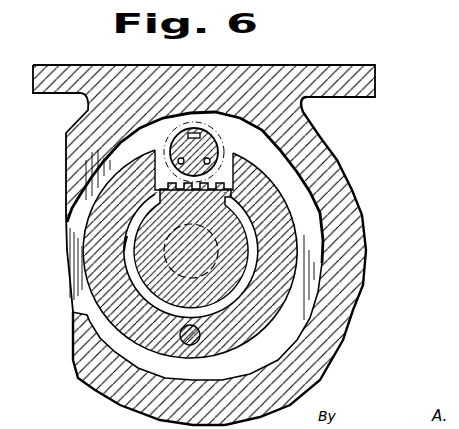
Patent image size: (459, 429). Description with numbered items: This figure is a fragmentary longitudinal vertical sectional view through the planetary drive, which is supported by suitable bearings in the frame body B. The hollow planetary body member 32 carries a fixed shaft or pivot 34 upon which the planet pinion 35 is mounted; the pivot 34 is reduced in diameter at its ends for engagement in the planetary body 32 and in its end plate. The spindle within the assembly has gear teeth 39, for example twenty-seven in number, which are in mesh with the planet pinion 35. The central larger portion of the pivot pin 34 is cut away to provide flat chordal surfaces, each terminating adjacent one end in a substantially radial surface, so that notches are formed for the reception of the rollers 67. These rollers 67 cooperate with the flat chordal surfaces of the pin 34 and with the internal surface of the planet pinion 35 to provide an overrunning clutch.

The frame body B is at (337, 147).
The fixed shaft 34 is at (245, 100).
The planet pinion 35 is at (163, 147).
The gear teeth 39 is at (240, 190).
The hollow planetary body member 32 is at (273, 265).
The rollers 67 is at (194, 128).